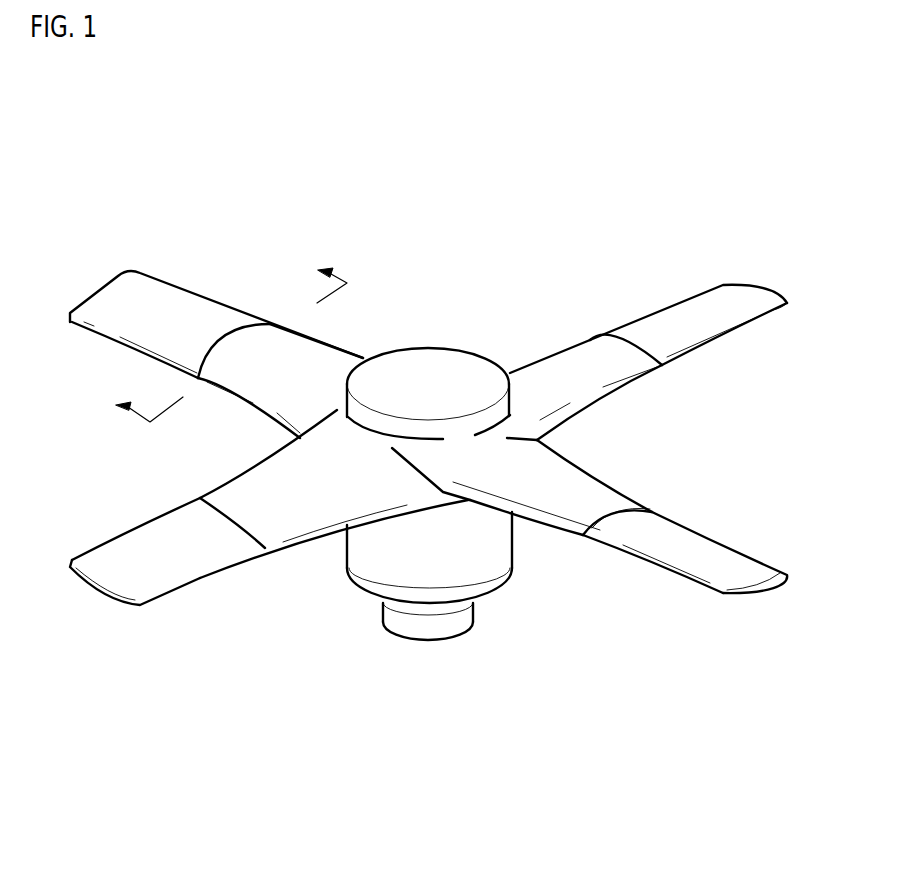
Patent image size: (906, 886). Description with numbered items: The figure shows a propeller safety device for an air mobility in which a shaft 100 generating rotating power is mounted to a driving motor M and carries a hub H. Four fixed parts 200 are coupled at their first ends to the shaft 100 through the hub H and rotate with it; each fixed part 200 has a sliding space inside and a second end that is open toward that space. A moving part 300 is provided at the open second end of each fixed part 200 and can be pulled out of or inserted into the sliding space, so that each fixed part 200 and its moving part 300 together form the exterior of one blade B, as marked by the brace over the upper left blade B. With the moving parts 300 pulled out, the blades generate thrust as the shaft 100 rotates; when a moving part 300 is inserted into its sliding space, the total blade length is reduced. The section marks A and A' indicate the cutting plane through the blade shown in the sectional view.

The shaft 100 is at (490, 540).
The fixed part 200 is at (270, 345).
The moving part 300 is at (145, 295).
The hub H is at (427, 365).
The driving motor M is at (427, 632).
The blade B is at (268, 196).
The section line A is at (137, 405).
The section line A' is at (317, 275).